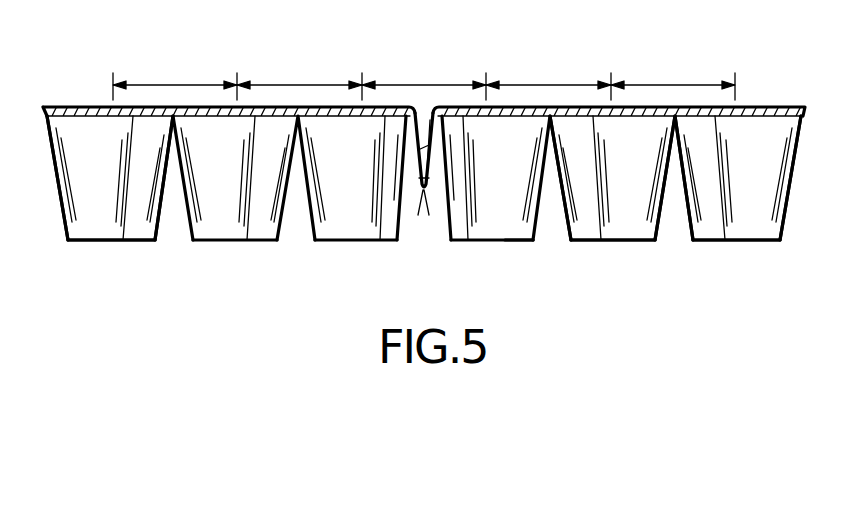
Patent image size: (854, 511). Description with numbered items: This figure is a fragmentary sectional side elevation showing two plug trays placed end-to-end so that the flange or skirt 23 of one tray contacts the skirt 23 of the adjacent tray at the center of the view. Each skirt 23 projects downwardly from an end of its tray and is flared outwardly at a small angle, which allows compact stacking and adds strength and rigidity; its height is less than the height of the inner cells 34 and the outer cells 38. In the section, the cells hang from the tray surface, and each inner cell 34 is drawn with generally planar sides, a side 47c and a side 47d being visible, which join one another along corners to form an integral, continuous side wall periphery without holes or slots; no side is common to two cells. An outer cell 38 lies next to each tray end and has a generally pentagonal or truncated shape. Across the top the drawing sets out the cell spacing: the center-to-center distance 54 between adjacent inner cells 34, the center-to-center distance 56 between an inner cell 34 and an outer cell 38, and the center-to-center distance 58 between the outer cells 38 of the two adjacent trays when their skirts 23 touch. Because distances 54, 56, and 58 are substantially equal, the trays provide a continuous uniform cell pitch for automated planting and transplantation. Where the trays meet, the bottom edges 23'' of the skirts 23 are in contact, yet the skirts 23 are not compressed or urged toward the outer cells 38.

The flange or skirt 23 is at (424, 61).
The bottom edge of skirt 23'' is at (419, 257).
The inner cell 34 is at (98, 242).
The outer cell 38 is at (520, 240).
The planar side 47c is at (113, 178).
The planar side 47d is at (140, 242).
The center-to-center distance 54 is at (175, 85).
The center-to-center distance 56 is at (302, 85).
The center-to-center distance 58 is at (421, 106).